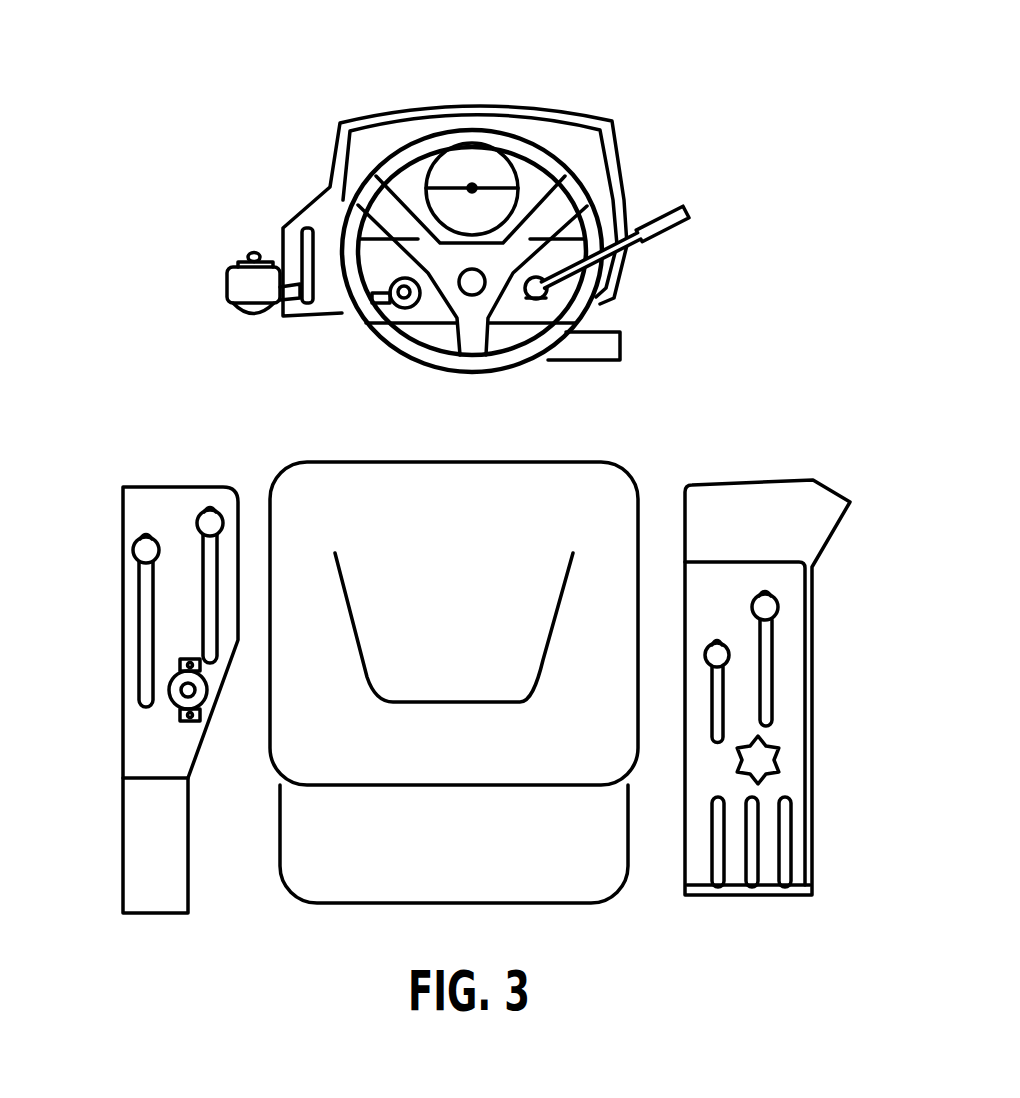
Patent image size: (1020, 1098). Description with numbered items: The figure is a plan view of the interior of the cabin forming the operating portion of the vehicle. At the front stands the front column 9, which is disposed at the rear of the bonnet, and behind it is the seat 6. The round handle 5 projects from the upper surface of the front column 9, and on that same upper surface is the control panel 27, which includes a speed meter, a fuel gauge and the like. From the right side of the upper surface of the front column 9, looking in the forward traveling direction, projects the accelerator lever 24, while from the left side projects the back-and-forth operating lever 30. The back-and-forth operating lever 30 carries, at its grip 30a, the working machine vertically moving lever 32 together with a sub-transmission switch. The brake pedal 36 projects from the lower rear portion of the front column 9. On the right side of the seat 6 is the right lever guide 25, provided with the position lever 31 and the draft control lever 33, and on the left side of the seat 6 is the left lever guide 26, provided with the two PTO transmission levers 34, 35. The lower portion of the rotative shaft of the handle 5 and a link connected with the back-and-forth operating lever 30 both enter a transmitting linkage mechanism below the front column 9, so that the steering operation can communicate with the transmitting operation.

The round handle 5 is at (533, 142).
The seat 6 is at (572, 462).
The front column 9 is at (370, 112).
The accelerator lever 24 is at (670, 212).
The right lever guide 25 is at (737, 487).
The left lever guide 26 is at (150, 495).
The control panel 27 is at (467, 158).
The back-and-forth operating lever 30 is at (293, 317).
The grip 30a is at (227, 287).
The position lever 31 is at (778, 604).
The working machine vertically moving lever 32 is at (253, 253).
The draft control lever 33 is at (729, 652).
The PTO transmission lever 34 is at (224, 513).
The PTO transmission lever 35 is at (131, 548).
The brake pedal 36 is at (623, 344).